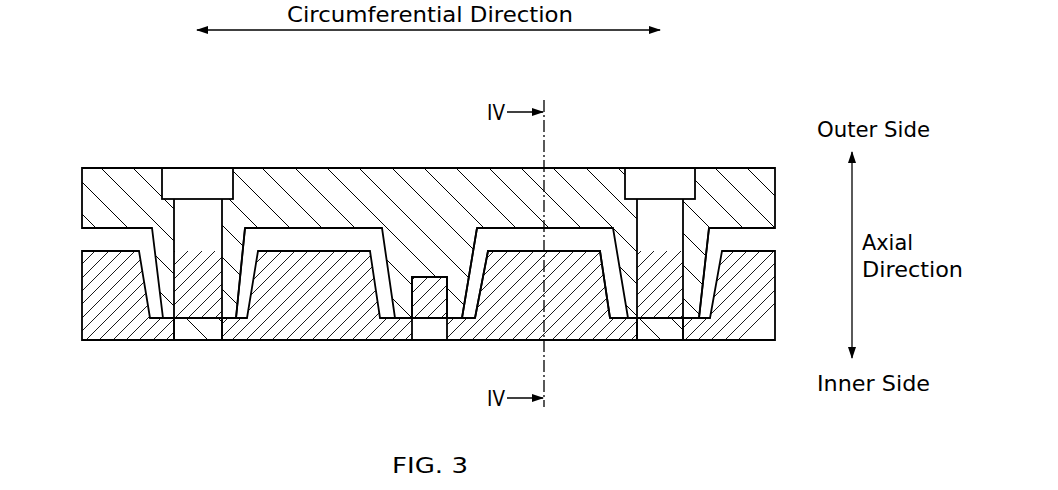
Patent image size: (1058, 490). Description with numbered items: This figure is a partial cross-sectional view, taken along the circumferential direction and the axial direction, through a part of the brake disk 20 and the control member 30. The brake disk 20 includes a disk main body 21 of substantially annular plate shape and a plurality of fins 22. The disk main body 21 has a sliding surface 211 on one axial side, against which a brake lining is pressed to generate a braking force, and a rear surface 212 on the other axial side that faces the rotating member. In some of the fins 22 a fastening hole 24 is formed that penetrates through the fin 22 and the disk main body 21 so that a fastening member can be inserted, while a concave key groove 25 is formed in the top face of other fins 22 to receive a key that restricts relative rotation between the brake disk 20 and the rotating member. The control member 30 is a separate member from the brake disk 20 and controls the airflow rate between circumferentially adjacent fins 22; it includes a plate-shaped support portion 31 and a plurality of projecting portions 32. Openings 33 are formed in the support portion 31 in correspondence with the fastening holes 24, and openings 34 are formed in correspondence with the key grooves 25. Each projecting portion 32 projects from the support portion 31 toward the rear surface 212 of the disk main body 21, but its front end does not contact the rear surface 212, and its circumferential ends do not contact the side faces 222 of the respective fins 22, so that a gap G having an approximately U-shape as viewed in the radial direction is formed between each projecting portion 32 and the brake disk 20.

The brake disk 20 is at (93, 143).
The disk main body 21 is at (727, 162).
The sliding surface 211 is at (290, 167).
The rear surface 212 is at (752, 250).
The fin 22 is at (240, 310).
The side face 222 is at (148, 318).
The fastening hole 24 is at (174, 237).
The key groove 25 is at (415, 297).
The control member 30 is at (95, 347).
The support portion 31 is at (585, 340).
The projecting portion 32 is at (103, 250).
The opening 33 is at (175, 330).
The opening 34 is at (445, 328).
The gap G is at (132, 243).